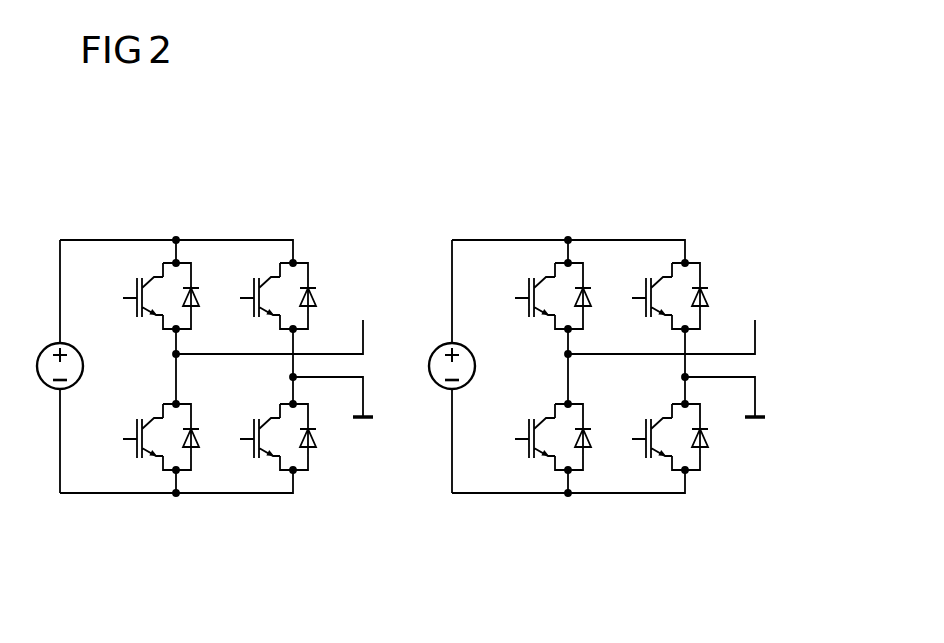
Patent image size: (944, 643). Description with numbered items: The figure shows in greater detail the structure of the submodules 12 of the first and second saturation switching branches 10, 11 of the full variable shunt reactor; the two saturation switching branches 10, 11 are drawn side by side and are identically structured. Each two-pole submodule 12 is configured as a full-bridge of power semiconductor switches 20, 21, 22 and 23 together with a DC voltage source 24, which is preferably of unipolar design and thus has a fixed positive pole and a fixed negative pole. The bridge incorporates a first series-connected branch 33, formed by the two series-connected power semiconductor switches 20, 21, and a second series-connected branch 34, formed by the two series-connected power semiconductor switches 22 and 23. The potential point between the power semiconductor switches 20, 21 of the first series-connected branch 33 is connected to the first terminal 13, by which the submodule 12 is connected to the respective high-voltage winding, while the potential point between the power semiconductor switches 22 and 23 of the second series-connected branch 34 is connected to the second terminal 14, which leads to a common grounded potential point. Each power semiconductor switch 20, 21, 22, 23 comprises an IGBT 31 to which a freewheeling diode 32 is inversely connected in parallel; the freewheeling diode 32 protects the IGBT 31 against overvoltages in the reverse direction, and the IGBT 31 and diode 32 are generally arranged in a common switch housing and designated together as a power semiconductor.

The saturation switching branch 10 is at (366, 250).
The saturation switching branch 11 is at (593, 371).
The two-pole submodule 12 is at (44, 492).
The first terminal 13 is at (365, 333).
The second terminal 14 is at (365, 400).
The power semiconductor switch 20 is at (124, 265).
The power semiconductor switch 21 is at (124, 466).
The power semiconductor switch 22 is at (239, 265).
The power semiconductor switch 23 is at (240, 466).
The DC voltage source 24 is at (41, 353).
The IGBT 31 is at (136, 313).
The freewheeling diode 32 is at (199, 300).
The first series-connected branch 33 is at (151, 254).
The second series-connected branch 34 is at (269, 254).